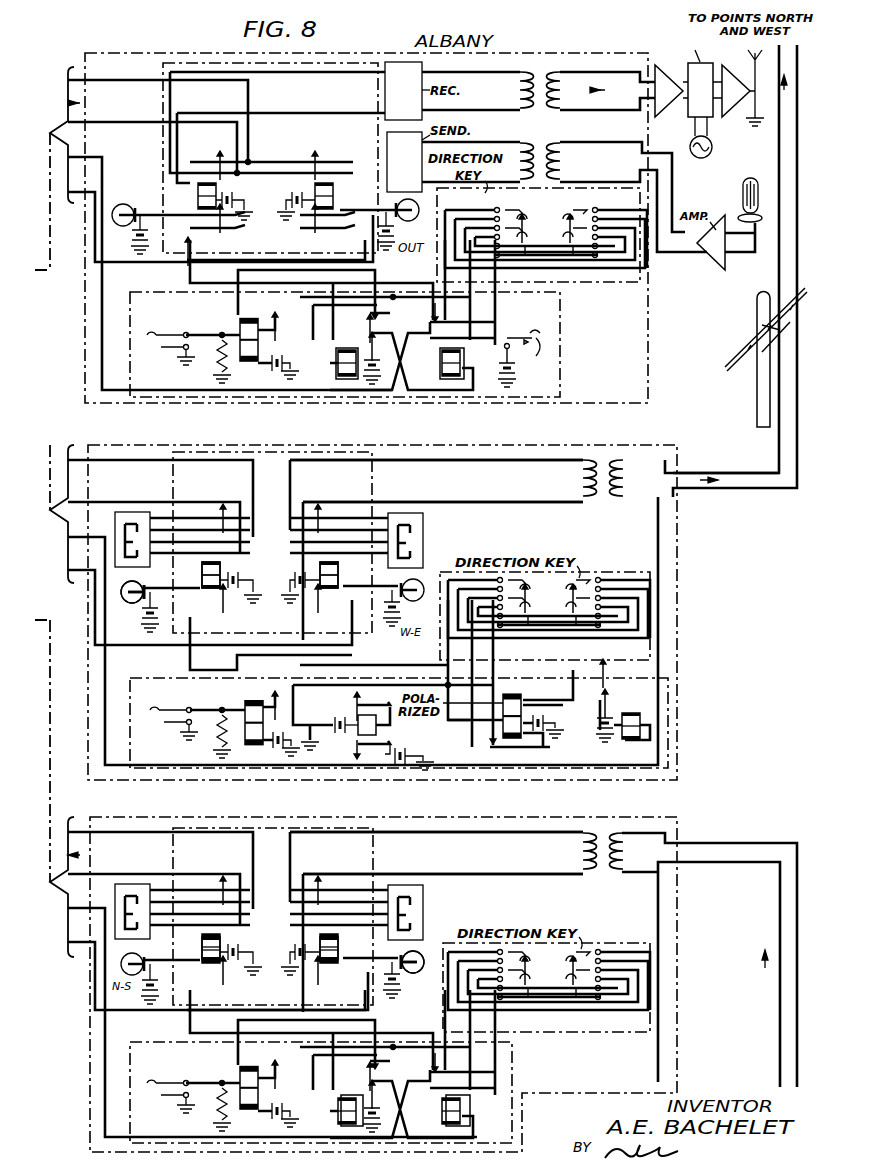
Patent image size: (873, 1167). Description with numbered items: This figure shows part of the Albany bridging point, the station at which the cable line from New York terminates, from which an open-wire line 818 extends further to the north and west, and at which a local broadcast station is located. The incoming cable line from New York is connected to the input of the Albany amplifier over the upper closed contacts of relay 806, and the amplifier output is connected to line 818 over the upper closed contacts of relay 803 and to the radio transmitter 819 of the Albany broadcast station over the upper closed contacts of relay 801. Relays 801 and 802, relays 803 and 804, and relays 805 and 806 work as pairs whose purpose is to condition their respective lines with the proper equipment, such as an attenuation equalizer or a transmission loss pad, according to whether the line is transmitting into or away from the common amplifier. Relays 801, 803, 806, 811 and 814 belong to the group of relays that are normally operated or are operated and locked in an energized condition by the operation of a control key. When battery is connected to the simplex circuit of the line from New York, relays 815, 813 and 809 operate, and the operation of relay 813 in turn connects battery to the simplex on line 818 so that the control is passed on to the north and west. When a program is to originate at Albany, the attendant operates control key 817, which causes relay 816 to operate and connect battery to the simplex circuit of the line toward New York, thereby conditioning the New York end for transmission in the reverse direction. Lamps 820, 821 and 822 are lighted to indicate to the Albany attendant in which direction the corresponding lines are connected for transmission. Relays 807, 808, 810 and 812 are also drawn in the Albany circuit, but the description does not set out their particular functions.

The relay 801 is at (198, 194).
The relay 802 is at (333, 196).
The relay 803 is at (202, 576).
The relay 804 is at (343, 575).
The relay 805 is at (202, 949).
The relay 806 is at (343, 950).
The relay 807 is at (240, 332).
The relay 808 is at (348, 347).
The relay 809 is at (442, 365).
The relay 810 is at (244, 706).
The relay 811 is at (355, 738).
The polarized relay 812 is at (518, 748).
The relay 813 is at (632, 740).
The relay 814 is at (238, 1078).
The relay 815 is at (352, 1095).
The relay 816 is at (470, 1113).
The control key 817 is at (526, 358).
The line 818 is at (757, 480).
The radio transmitter 819 is at (702, 89).
The lamp 820 is at (133, 206).
The lamp 821 is at (132, 602).
The lamp 822 is at (422, 952).